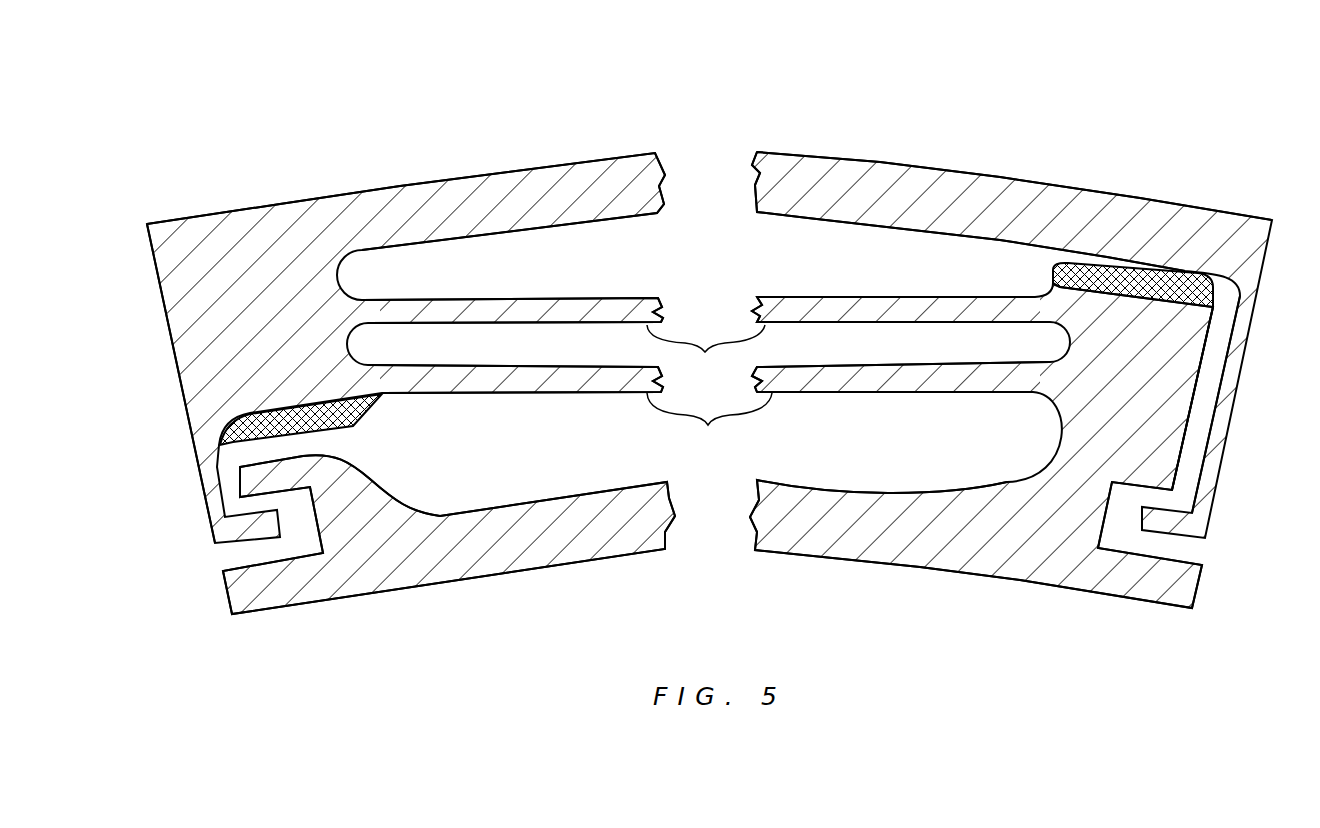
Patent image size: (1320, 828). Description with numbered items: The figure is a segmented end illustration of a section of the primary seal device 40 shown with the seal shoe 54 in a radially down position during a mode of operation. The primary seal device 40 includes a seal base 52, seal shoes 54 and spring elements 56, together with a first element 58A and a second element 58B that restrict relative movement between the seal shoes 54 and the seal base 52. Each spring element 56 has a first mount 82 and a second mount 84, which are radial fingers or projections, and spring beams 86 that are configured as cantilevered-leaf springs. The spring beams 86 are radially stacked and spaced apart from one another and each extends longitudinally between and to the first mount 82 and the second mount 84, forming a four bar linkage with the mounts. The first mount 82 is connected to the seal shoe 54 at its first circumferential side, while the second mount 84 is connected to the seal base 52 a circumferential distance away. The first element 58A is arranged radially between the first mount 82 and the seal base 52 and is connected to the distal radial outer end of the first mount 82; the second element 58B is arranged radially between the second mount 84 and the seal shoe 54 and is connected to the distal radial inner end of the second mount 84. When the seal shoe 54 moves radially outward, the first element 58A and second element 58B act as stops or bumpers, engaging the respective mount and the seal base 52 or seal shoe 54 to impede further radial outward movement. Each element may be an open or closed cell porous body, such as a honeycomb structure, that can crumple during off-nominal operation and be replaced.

The primary seal device 40 is at (1146, 92).
The seal base 52 is at (597, 148).
The seal shoe 54 is at (560, 576).
The spring element 56 is at (557, 288).
The first element 58A is at (1152, 277).
The second element 58B is at (220, 457).
The first mount 82 is at (1193, 397).
The second mount 84 is at (177, 360).
The spring beam 86 is at (709, 389).